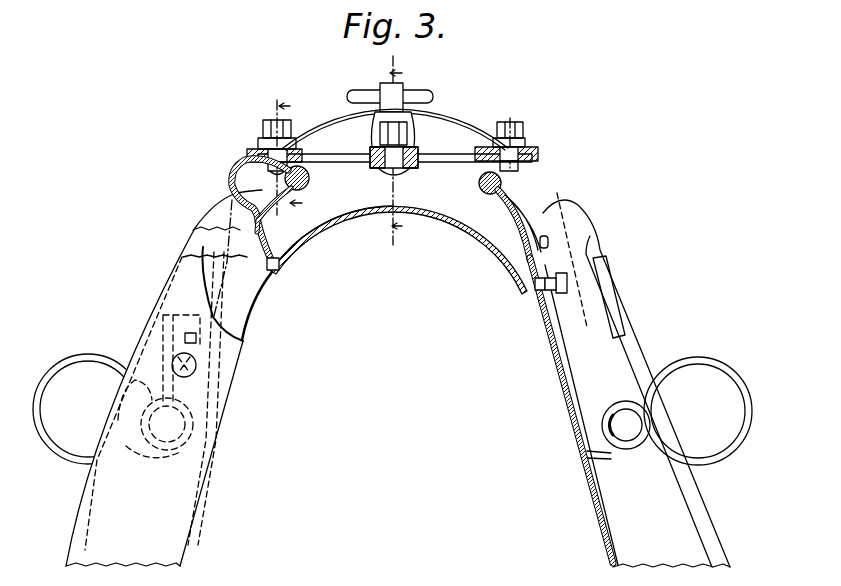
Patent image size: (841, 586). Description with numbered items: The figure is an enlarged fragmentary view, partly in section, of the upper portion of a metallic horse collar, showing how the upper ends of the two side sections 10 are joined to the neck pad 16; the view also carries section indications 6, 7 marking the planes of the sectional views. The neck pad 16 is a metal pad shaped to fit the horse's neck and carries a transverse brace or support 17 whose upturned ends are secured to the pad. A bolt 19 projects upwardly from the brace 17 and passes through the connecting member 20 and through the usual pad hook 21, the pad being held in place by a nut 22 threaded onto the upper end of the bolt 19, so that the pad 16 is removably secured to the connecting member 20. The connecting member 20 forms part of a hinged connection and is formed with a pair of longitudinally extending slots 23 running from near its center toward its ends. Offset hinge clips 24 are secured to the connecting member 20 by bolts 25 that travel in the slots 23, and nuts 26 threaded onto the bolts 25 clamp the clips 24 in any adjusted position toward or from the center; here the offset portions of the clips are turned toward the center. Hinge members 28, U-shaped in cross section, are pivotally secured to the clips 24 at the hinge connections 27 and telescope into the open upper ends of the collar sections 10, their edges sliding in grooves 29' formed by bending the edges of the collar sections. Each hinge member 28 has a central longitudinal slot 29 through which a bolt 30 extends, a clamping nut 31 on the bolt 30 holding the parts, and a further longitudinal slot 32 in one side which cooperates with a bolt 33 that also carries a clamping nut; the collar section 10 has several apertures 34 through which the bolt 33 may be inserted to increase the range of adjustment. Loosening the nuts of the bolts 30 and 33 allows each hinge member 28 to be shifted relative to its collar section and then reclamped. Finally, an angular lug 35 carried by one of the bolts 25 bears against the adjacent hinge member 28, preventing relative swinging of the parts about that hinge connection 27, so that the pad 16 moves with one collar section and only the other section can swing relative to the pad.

The center section line 6 is at (397, 149).
The bolt section line 7 is at (393, 153).
The collar side section 10 is at (178, 513).
The neck pad 16 is at (426, 212).
The transverse brace or support 17 is at (370, 212).
The bolt 19 is at (400, 175).
The connecting member 20 is at (418, 157).
The pad hook 21 is at (378, 158).
The nut 22 is at (415, 118).
The slots 23 is at (349, 165).
The offset hinge clips 24 is at (297, 143).
The bolts 25 is at (258, 151).
The nuts 26 is at (268, 127).
The hinge connection 27 is at (292, 190).
The hinge members 28 is at (247, 200).
The slot 29 is at (406, 274).
The grooves 29' is at (620, 293).
The bolt 30 is at (537, 303).
The nut 31 is at (563, 297).
The slot 32 is at (183, 318).
The bolt 33 is at (198, 370).
The apertures 34 is at (198, 341).
The angular lug 35 is at (242, 164).